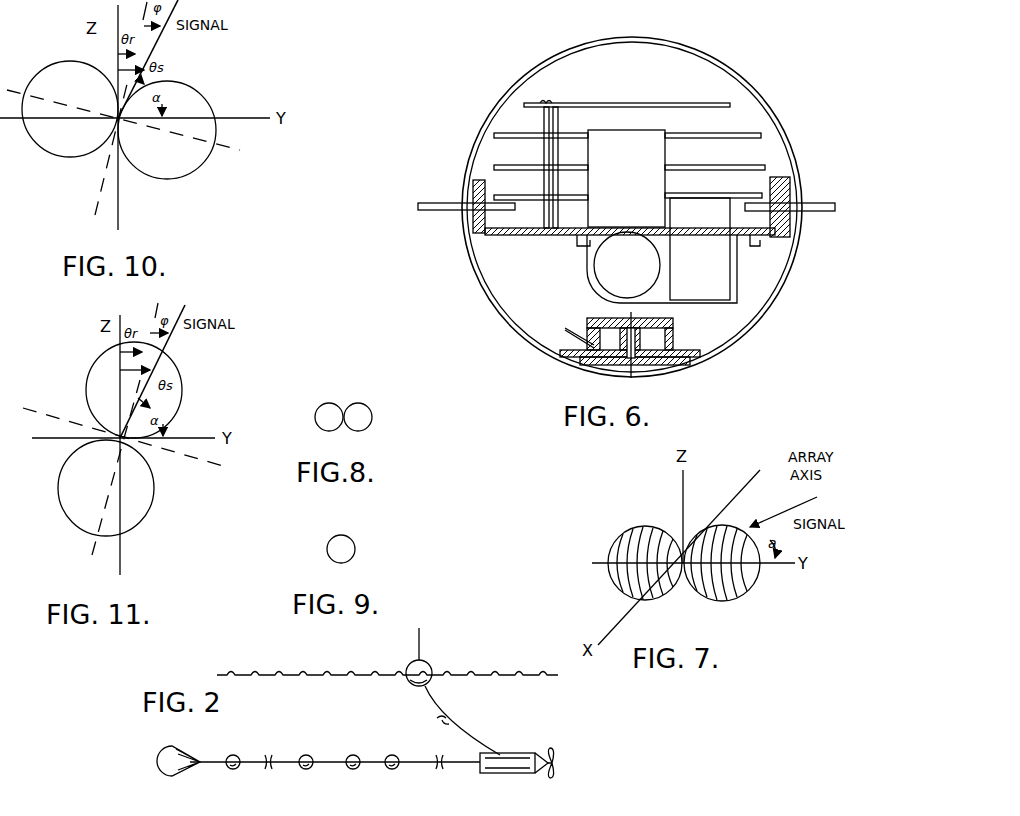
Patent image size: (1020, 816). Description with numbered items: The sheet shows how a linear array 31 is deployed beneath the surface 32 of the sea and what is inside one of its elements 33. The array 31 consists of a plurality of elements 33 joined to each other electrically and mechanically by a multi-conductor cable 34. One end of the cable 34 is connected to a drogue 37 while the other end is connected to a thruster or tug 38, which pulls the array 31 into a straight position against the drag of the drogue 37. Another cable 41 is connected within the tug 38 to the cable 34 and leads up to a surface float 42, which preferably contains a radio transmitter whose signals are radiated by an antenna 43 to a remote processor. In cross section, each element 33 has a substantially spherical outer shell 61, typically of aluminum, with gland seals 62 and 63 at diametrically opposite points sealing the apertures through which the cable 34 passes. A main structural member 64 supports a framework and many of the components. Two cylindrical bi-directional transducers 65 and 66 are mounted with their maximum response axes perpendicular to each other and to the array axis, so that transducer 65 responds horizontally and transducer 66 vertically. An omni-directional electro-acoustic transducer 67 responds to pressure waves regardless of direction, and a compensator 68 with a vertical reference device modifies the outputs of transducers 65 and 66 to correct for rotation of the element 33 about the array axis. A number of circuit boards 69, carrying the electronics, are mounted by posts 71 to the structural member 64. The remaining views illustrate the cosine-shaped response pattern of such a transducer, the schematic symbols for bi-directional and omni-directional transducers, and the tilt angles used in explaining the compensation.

In FIG. 2, the linear array 31 is at (335, 736).
In FIG. 2, the surface of the sea 32 is at (277, 672).
In FIG. 6, the elements 33 is at (468, 346).
In FIG. 2, the elements 33 is at (229, 770).
In FIG. 6, the multi-conductor cable 34 is at (452, 203).
In FIG. 2, the multi-conductor cable 34 is at (375, 768).
In FIG. 2, the drogue 37 is at (184, 750).
In FIG. 2, the thruster or tug 38 is at (500, 776).
In FIG. 2, the cable 41 is at (466, 740).
In FIG. 2, the surface float 42 is at (431, 666).
In FIG. 2, the antenna 43 is at (420, 648).
In FIG. 6, the outer shell 61 is at (752, 112).
In FIG. 6, the gland seal 62 is at (485, 194).
In FIG. 6, the gland seal 63 is at (768, 194).
In FIG. 6, the main structural member 64 is at (552, 238).
In FIG. 6, the bi-directional transducer 65 is at (662, 267).
In FIG. 6, the bi-directional transducer 66 is at (626, 178).
In FIG. 6, the omni-directional electro-acoustic transducer 67 is at (674, 322).
In FIG. 6, the compensator 68 is at (700, 249).
In FIG. 6, the circuit boards 69 is at (656, 101).
In FIG. 6, the posts 71 is at (554, 128).